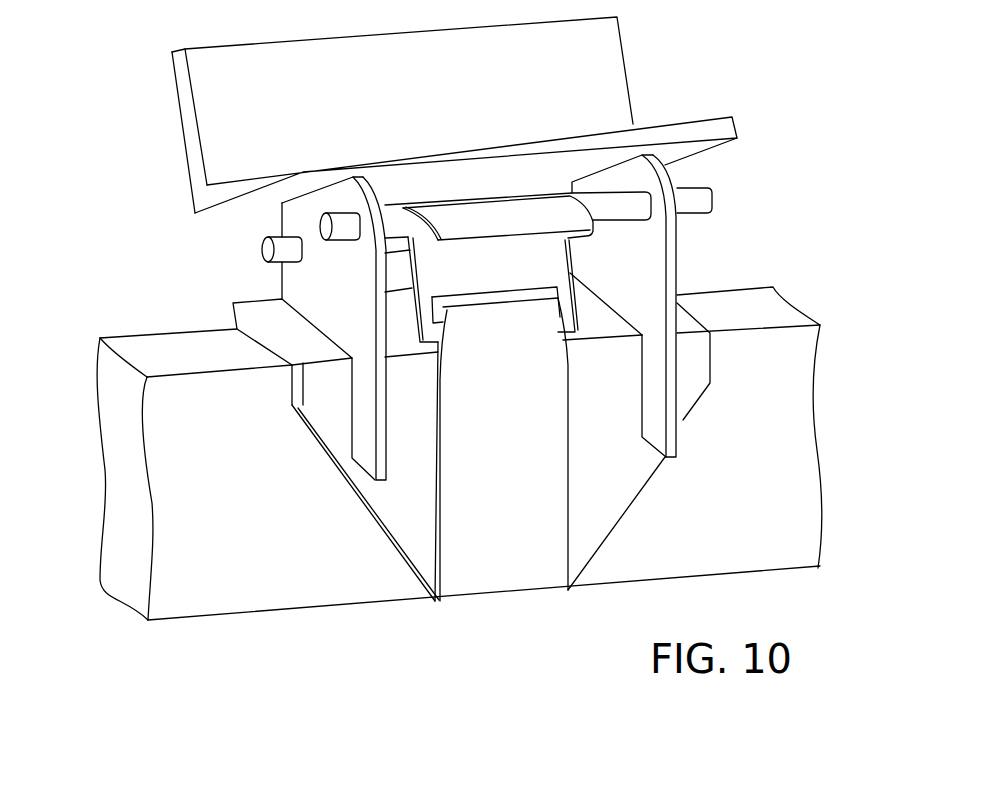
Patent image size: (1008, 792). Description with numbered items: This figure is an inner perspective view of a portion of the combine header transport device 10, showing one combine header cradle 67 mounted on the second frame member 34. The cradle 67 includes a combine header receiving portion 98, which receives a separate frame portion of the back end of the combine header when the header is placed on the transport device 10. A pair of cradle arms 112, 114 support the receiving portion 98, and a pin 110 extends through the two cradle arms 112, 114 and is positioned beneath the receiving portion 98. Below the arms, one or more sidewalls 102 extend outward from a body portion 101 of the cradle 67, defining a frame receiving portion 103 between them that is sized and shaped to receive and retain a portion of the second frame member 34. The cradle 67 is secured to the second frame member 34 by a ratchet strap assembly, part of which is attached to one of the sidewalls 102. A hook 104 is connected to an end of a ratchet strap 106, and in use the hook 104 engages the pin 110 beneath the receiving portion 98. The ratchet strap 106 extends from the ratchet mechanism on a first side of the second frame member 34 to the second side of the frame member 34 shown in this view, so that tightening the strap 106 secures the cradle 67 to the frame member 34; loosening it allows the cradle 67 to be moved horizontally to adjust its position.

The combine header transport device 10 is at (682, 117).
The combine header cradle 67 is at (188, 128).
The combine header receiving portion 98 is at (233, 175).
The pin 110 is at (710, 200).
The hook 104 is at (553, 268).
The cradle arm 112 is at (678, 278).
The cradle arm 114 is at (303, 285).
The body portion 101 is at (303, 350).
The second frame member 34 is at (820, 447).
The sidewall 102 is at (605, 487).
The frame receiving portion 103 is at (360, 505).
The ratchet strap 106 is at (513, 563).